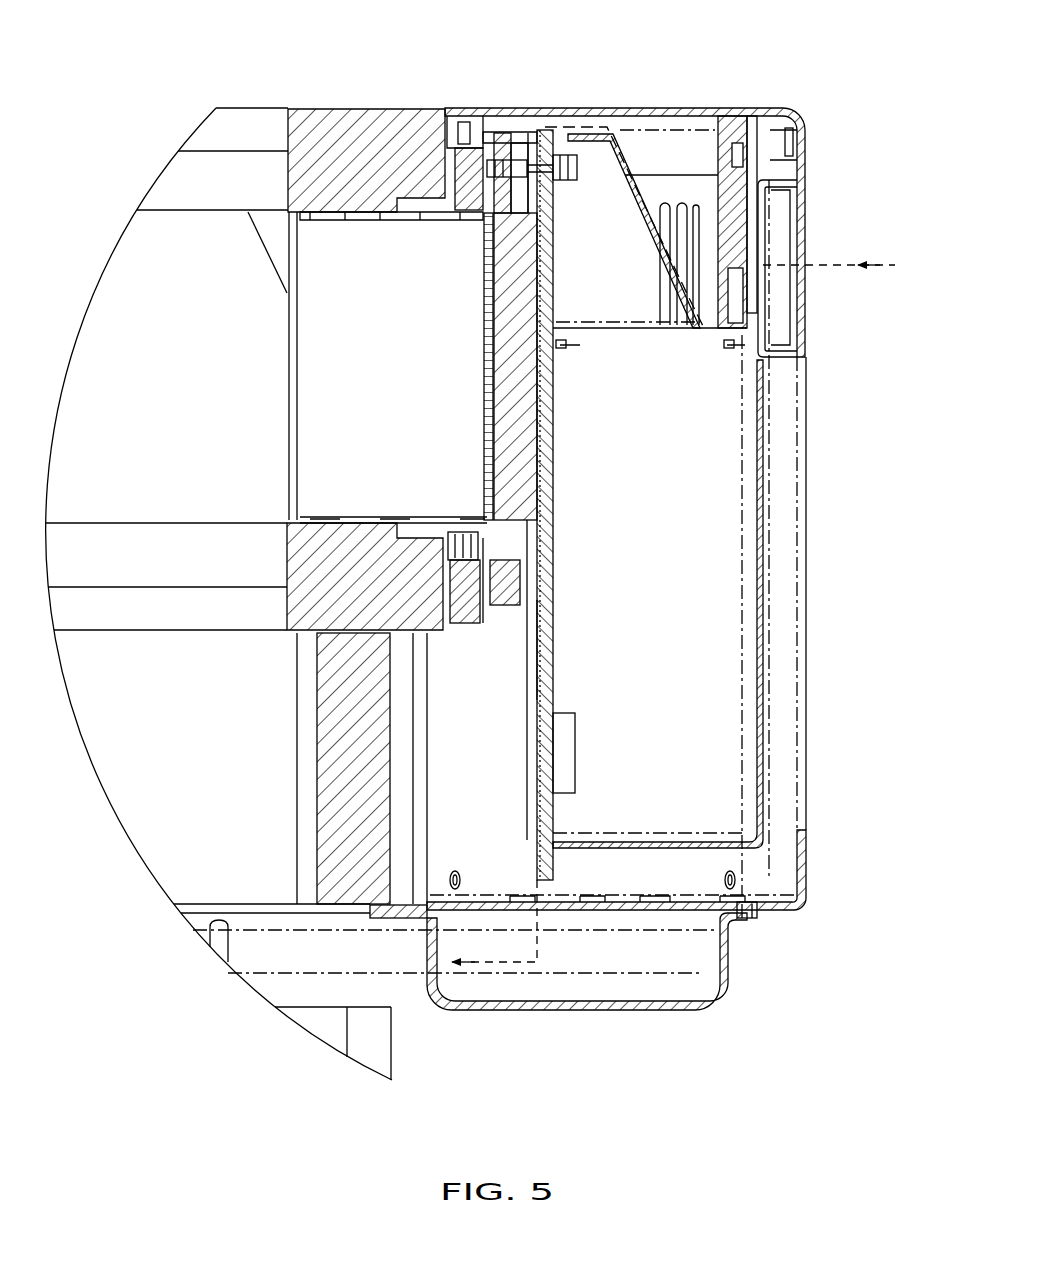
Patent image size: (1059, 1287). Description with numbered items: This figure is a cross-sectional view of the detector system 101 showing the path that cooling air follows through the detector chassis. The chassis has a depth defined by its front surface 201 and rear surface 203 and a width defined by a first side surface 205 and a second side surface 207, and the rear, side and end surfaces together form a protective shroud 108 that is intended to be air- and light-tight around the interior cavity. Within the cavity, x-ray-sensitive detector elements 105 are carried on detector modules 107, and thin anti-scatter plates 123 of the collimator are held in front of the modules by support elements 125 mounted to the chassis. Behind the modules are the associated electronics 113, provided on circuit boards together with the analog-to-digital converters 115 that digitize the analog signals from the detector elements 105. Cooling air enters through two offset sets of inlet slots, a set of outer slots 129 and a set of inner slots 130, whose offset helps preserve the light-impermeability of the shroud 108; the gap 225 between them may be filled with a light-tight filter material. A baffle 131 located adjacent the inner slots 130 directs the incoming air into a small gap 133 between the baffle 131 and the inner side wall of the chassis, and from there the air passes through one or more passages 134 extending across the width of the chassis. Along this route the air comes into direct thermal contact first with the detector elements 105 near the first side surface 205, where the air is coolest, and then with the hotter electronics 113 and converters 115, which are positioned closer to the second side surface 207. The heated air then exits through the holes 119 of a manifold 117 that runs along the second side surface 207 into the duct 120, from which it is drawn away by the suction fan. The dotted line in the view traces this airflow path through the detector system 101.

The detector system 101 is at (348, 118).
The detector elements 105 is at (490, 265).
The detector modules 107 is at (490, 400).
The protective shroud 108 is at (684, 110).
The electronics 113 is at (566, 640).
The analog-to-digital converters 115 is at (556, 600).
The manifold 117 is at (594, 902).
The holes 119 is at (546, 910).
The duct 120 is at (587, 961).
The anti-scatter plates 123 is at (331, 366).
The support elements 125 is at (347, 220).
The outer slots 129 is at (798, 232).
The inner slots 130 is at (694, 246).
The baffle 131 is at (668, 262).
The gap 133 is at (585, 128).
The passage 134 is at (535, 198).
The front surface 201 is at (276, 128).
The rear surface 203 is at (822, 545).
The first side surface 205 is at (530, 106).
The second side surface 207 is at (528, 1022).
The gap between outer and inner slots 225 is at (781, 267).